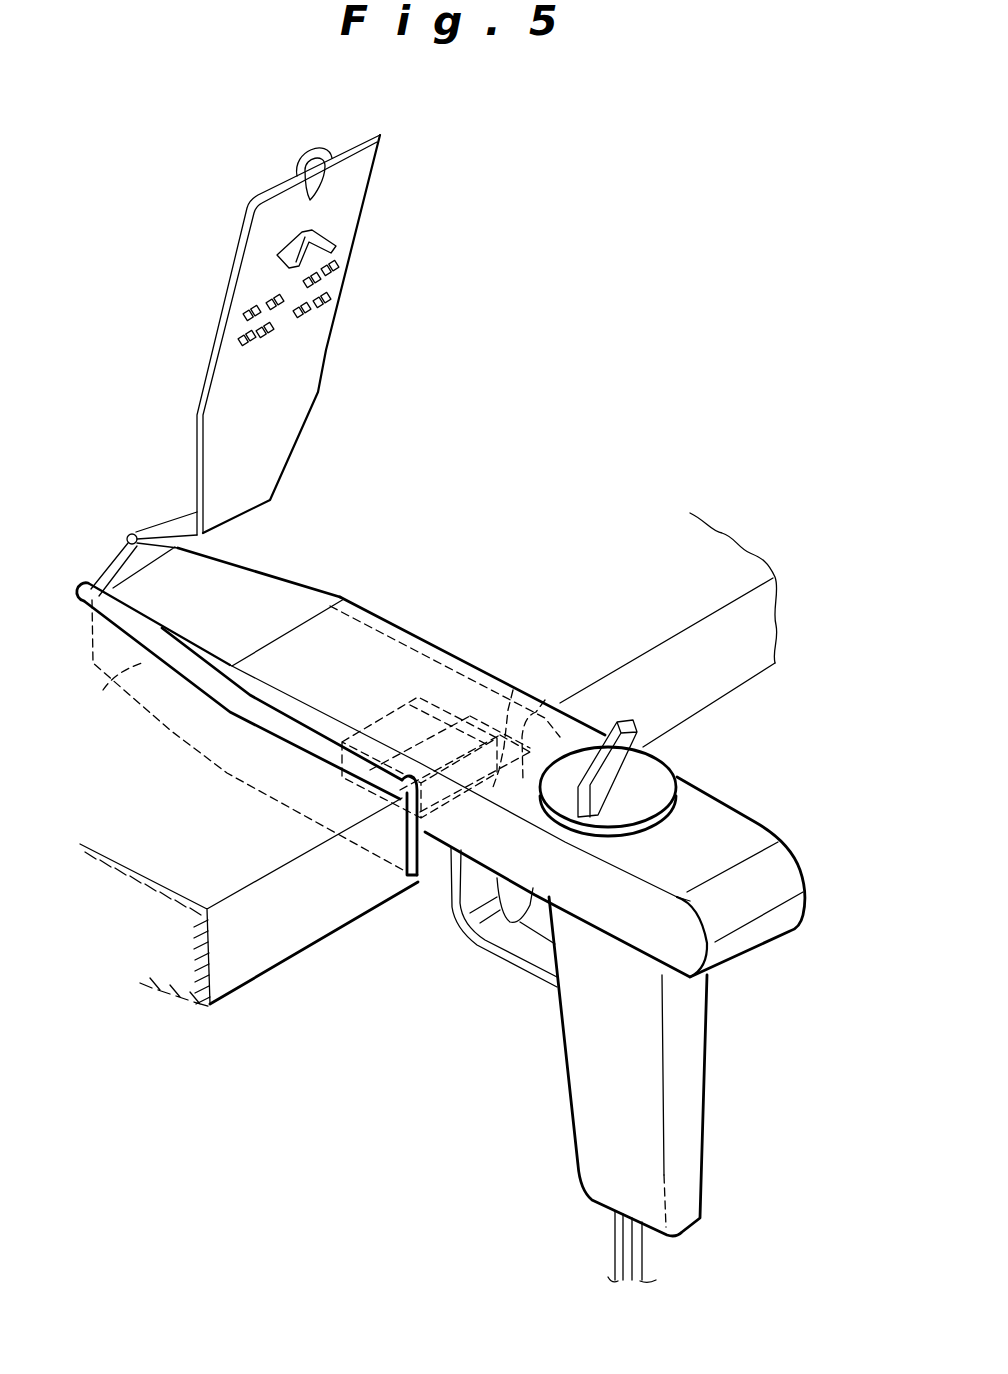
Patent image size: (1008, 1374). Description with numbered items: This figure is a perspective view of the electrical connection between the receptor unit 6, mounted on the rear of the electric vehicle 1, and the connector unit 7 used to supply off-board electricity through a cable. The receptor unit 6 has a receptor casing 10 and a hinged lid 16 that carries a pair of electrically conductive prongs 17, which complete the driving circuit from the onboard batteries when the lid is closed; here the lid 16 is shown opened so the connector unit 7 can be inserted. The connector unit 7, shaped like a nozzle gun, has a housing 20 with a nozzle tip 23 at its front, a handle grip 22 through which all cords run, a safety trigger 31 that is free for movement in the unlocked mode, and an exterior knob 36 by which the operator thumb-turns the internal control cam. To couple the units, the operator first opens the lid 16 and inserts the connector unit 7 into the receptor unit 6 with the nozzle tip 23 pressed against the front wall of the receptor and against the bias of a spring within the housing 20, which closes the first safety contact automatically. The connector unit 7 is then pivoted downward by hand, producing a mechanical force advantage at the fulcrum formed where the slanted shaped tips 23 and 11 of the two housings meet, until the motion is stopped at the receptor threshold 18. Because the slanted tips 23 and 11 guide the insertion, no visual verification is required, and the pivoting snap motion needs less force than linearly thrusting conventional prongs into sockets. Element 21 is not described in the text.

The electric vehicle 1 is at (235, 978).
The receptor unit 6 is at (222, 777).
The connector unit 7 is at (755, 798).
The receptor casing 10 is at (420, 822).
The slanted shaped tip 11 is at (127, 670).
The lid 16 is at (307, 343).
The electrically conductive prongs 17 is at (326, 243).
The receptor threshold 18 is at (513, 690).
The housing 20 is at (387, 615).
The housing body 21 is at (687, 777).
The handle grip 22 is at (645, 1120).
The nozzle tip 23 is at (247, 587).
The safety trigger 31 is at (508, 917).
The exterior knob 36 is at (655, 791).